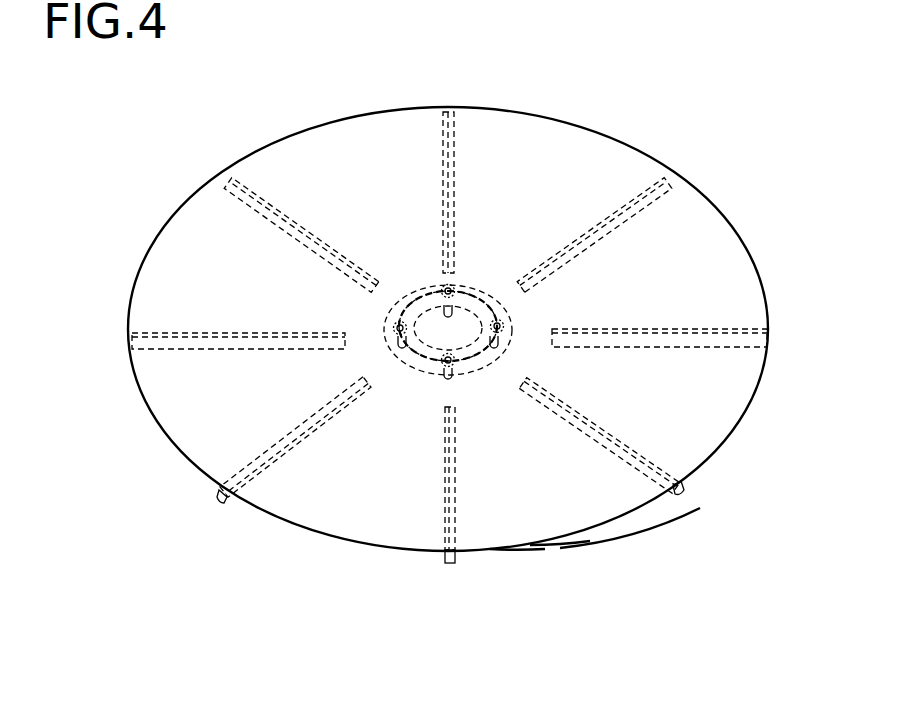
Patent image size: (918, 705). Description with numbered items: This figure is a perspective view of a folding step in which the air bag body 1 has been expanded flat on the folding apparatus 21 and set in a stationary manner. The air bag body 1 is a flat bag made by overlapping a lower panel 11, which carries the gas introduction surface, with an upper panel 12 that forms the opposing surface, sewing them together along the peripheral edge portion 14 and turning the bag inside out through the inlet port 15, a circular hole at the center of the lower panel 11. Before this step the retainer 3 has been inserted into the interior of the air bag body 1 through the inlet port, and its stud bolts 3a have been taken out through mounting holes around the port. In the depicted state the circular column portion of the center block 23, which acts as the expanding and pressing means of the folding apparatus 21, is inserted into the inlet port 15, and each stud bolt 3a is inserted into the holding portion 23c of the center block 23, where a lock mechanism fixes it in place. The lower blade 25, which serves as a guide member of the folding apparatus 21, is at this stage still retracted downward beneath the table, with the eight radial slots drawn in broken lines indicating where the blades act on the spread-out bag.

The air bag body 1 is at (712, 422).
The retainer 3 is at (500, 304).
The stud bolts 3a is at (502, 334).
The lower panel 11 is at (556, 540).
The upper panel 12 is at (610, 505).
The peripheral edge portion 14 is at (520, 545).
The inlet port 15 is at (458, 290).
The folding apparatus 21 is at (718, 535).
The center block 23 is at (478, 374).
The holding portion 23c is at (500, 345).
The lower blade 25 is at (453, 126).